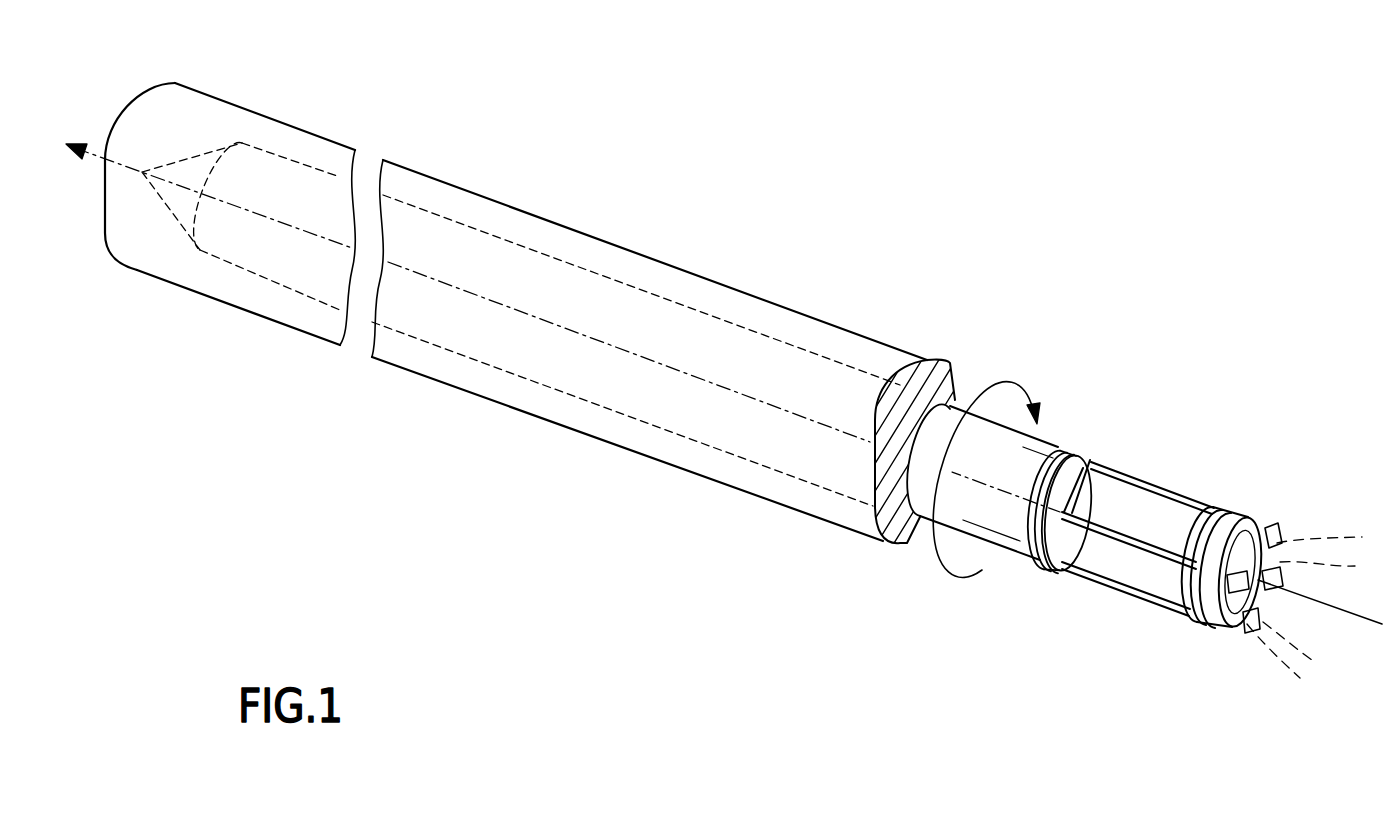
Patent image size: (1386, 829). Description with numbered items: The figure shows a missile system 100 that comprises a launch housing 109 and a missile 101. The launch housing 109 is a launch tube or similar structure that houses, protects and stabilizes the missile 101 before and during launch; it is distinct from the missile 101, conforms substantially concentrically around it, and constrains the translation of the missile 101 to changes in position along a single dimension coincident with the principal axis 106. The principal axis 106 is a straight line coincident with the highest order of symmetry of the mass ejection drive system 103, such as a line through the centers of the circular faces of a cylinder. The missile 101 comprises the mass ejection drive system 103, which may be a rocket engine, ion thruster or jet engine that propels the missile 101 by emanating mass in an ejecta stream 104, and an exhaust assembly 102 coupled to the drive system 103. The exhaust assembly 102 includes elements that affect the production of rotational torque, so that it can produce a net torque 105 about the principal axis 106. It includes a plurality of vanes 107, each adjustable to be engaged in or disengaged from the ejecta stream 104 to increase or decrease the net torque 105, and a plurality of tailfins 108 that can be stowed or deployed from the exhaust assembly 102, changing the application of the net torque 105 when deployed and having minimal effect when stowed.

The missile system 100 is at (604, 570).
The missile 101 is at (303, 183).
The exhaust assembly 102 is at (1268, 490).
The mass ejection drive system 103 is at (933, 412).
The ejecta stream 104 is at (1317, 540).
The net torque 105 is at (1030, 402).
The principal axis 106 is at (105, 158).
The vane 107 is at (1228, 581).
The tailfin 108 is at (1118, 502).
The launch housing 109 is at (757, 297).